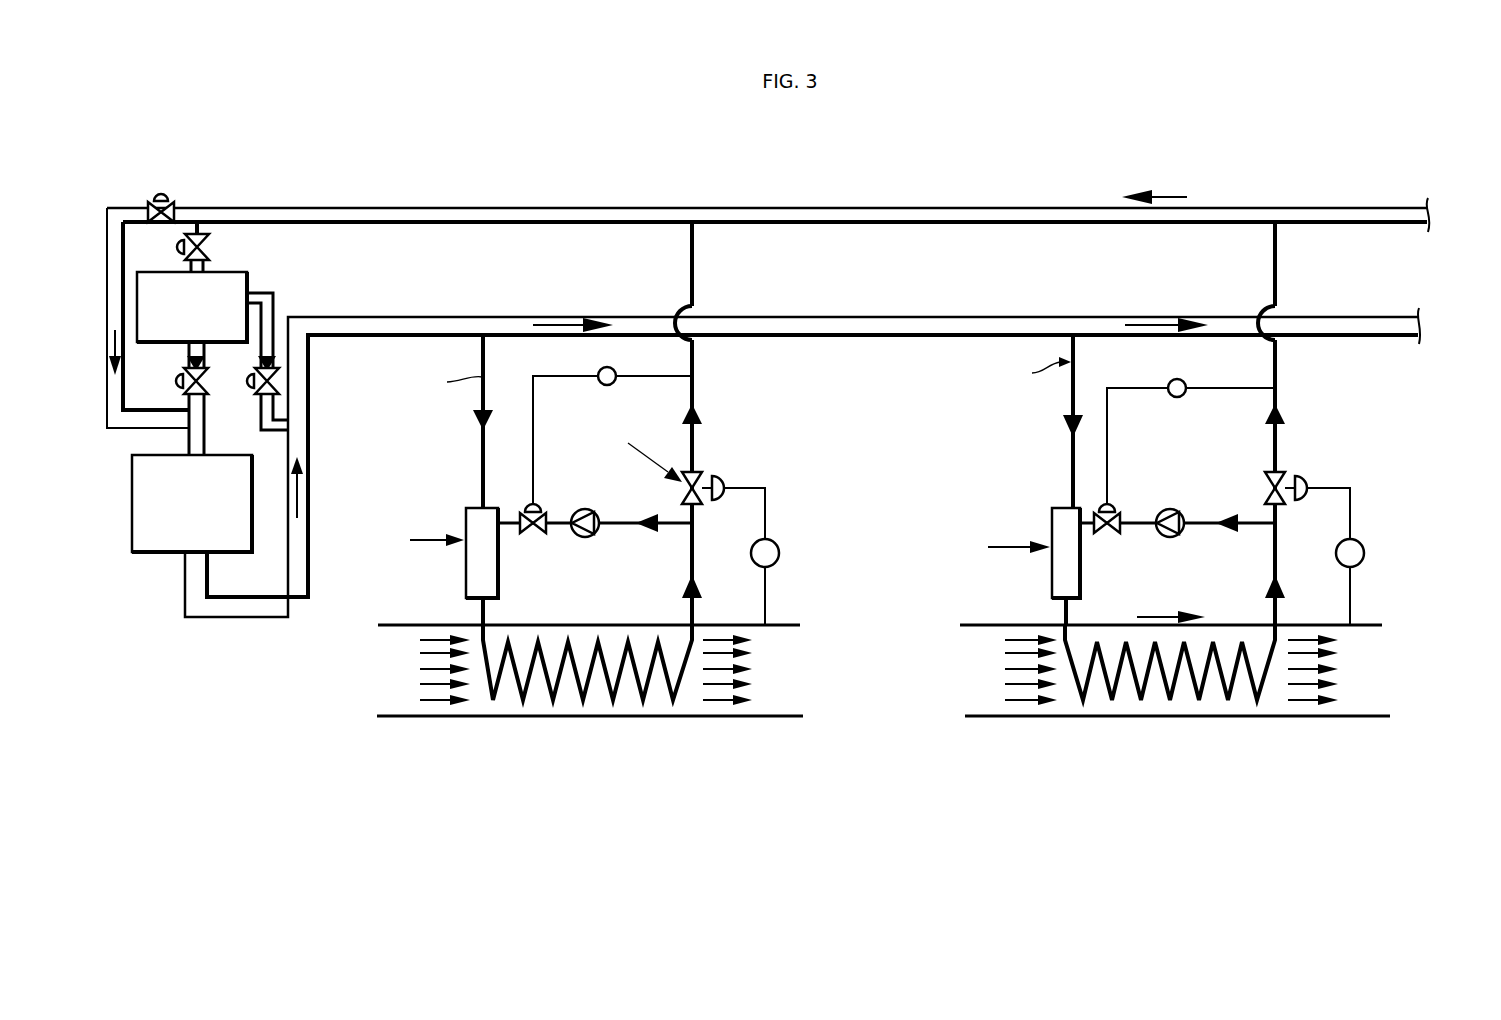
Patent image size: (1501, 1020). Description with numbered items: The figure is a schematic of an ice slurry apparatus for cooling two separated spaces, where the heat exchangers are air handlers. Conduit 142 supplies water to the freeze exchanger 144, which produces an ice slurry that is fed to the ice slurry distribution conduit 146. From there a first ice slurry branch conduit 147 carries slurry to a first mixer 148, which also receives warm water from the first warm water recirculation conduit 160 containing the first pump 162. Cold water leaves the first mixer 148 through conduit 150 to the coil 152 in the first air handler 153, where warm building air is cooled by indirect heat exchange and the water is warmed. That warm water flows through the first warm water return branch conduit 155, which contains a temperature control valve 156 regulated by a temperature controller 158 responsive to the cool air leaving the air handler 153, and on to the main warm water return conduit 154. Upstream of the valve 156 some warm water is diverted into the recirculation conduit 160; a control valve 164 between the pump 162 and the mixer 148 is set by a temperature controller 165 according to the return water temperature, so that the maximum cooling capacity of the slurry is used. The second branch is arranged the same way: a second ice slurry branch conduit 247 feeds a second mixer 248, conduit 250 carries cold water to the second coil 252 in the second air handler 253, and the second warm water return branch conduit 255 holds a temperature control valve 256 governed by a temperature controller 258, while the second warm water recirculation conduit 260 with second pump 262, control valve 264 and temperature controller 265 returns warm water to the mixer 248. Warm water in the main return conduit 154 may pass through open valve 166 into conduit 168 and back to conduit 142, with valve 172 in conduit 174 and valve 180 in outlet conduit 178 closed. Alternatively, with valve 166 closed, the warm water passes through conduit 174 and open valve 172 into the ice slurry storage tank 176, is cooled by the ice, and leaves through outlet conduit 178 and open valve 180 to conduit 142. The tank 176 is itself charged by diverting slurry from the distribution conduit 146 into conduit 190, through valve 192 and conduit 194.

The conduit 142 is at (204, 440).
The freeze exchanger 144 is at (152, 553).
The ice slurry distribution conduit 146 is at (432, 317).
The first ice slurry branch conduit 147 is at (482, 470).
The first mixer 148 is at (466, 576).
The conduit 150 is at (484, 600).
The coil 152 is at (572, 655).
The first air handler 153 is at (458, 717).
The main warm water return conduit 154 is at (1092, 209).
The first warm water return branch conduit 155 is at (690, 370).
The temperature control valve 156 is at (700, 480).
The temperature controller 158 is at (775, 568).
The first warm water recirculation conduit 160 is at (518, 521).
The first pump 162 is at (595, 511).
The control valve 164 is at (538, 505).
The temperature controller 165 is at (600, 370).
The valve 166 is at (168, 205).
The conduit 168 is at (122, 209).
The valve 172 is at (209, 244).
The conduit 174 is at (205, 228).
The ice slurry storage tank 176 is at (153, 271).
The outlet conduit 178 is at (187, 398).
The valve 180 is at (211, 360).
The conduit 190 is at (266, 430).
The valve 192 is at (256, 392).
The conduit 194 is at (275, 303).
The second ice slurry branch conduit 247 is at (1073, 466).
The second mixer 248 is at (1052, 570).
The conduit 250 is at (1065, 612).
The second coil 252 is at (1233, 685).
The second air handler 253 is at (1033, 717).
The second warm water return branch conduit 255 is at (1278, 273).
The temperature control valve 256 is at (1272, 482).
The temperature controller 258 is at (1365, 548).
The second warm water recirculation conduit 260 is at (1092, 521).
The second pump 262 is at (1170, 509).
The control valve 264 is at (1110, 505).
The temperature controller 265 is at (1172, 380).